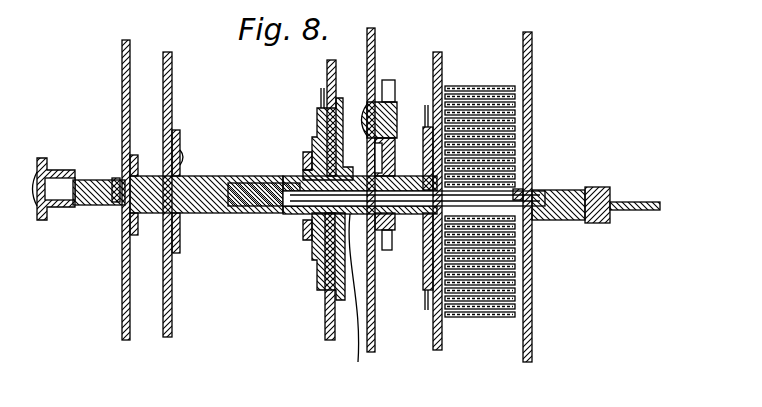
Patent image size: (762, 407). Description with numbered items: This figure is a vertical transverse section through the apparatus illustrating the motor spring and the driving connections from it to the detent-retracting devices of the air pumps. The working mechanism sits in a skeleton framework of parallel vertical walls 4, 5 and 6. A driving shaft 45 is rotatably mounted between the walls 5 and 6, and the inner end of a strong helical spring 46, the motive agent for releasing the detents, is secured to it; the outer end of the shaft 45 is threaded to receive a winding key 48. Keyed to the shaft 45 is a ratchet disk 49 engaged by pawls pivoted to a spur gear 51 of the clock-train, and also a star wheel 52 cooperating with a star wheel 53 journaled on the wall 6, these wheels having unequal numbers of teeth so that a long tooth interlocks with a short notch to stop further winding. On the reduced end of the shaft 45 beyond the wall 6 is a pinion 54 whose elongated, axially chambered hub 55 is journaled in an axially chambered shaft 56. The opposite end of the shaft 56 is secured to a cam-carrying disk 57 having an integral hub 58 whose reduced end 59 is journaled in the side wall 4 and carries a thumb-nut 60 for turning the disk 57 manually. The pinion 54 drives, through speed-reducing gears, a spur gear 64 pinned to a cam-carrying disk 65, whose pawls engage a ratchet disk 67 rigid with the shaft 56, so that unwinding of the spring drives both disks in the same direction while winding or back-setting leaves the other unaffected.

The side wall 4 is at (122, 63).
The side wall 5 is at (532, 45).
The intermediate wall 6 is at (376, 40).
The driving shaft 45 is at (520, 194).
The helical spring 46 is at (515, 112).
The winding key 48 is at (622, 200).
The ratchet disk 49 is at (427, 243).
The spur gear 51 is at (441, 55).
The star wheel 52 is at (388, 250).
The star wheel 53 is at (389, 80).
The pinion 54 is at (368, 295).
The elongated hub 55 is at (272, 213).
The axially chambered shaft 56 is at (222, 176).
The cam-carrying disk 57 is at (172, 90).
The integral hub 58 is at (148, 213).
The reduced end 59 is at (112, 205).
The thumb-nut 60 is at (45, 226).
The spur gear 64 is at (337, 305).
The cam-carrying disk 65 is at (327, 62).
The ratchet disk 67 is at (318, 126).